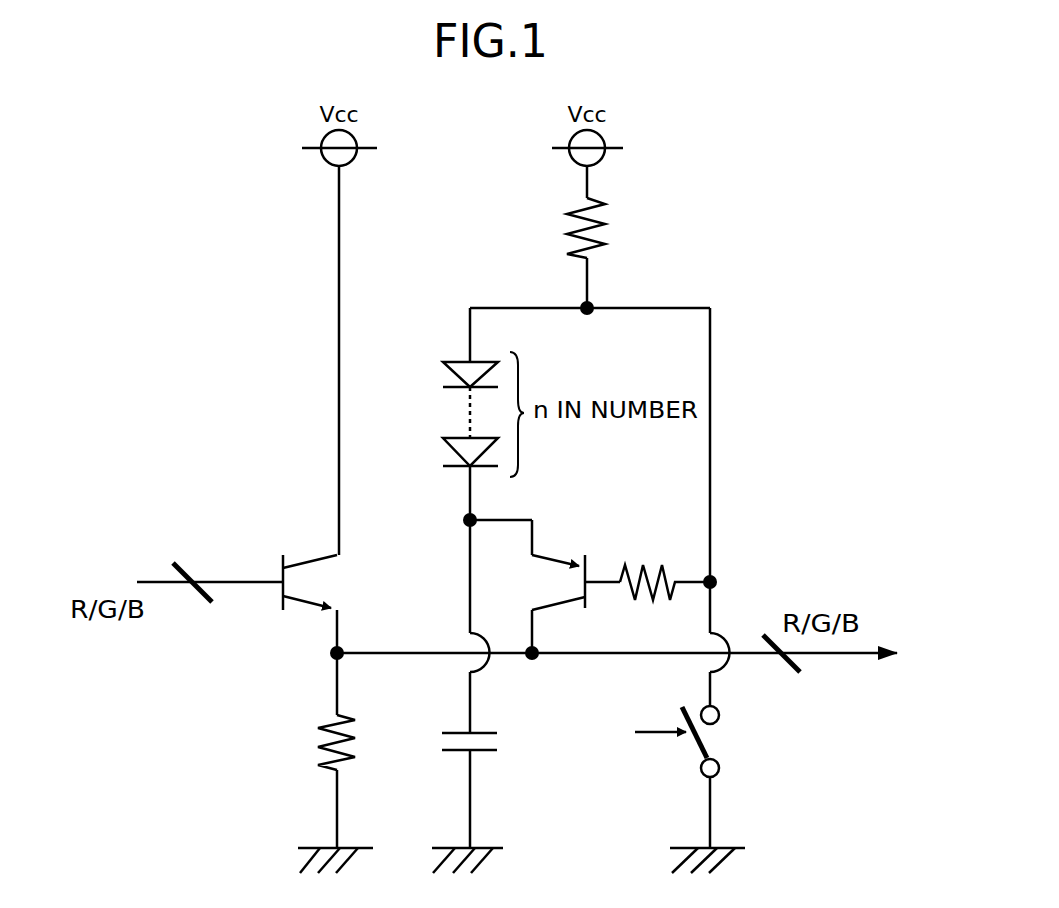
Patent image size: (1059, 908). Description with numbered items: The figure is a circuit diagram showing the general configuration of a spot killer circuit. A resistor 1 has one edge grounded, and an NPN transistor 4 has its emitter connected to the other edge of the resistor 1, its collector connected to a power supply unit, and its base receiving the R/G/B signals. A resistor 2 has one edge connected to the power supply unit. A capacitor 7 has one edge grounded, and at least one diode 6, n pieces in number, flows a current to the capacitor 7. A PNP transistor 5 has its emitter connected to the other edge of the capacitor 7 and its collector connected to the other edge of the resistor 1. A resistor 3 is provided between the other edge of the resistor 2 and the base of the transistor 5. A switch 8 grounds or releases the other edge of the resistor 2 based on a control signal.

The resistor 1 is at (320, 750).
The resistor 2 is at (565, 228).
The resistor 3 is at (745, 512).
The NPN transistor 4 is at (283, 560).
The PNP transistor 5 is at (587, 565).
The diode 6 is at (455, 413).
The capacitor 7 is at (485, 752).
The switch 8 is at (700, 742).